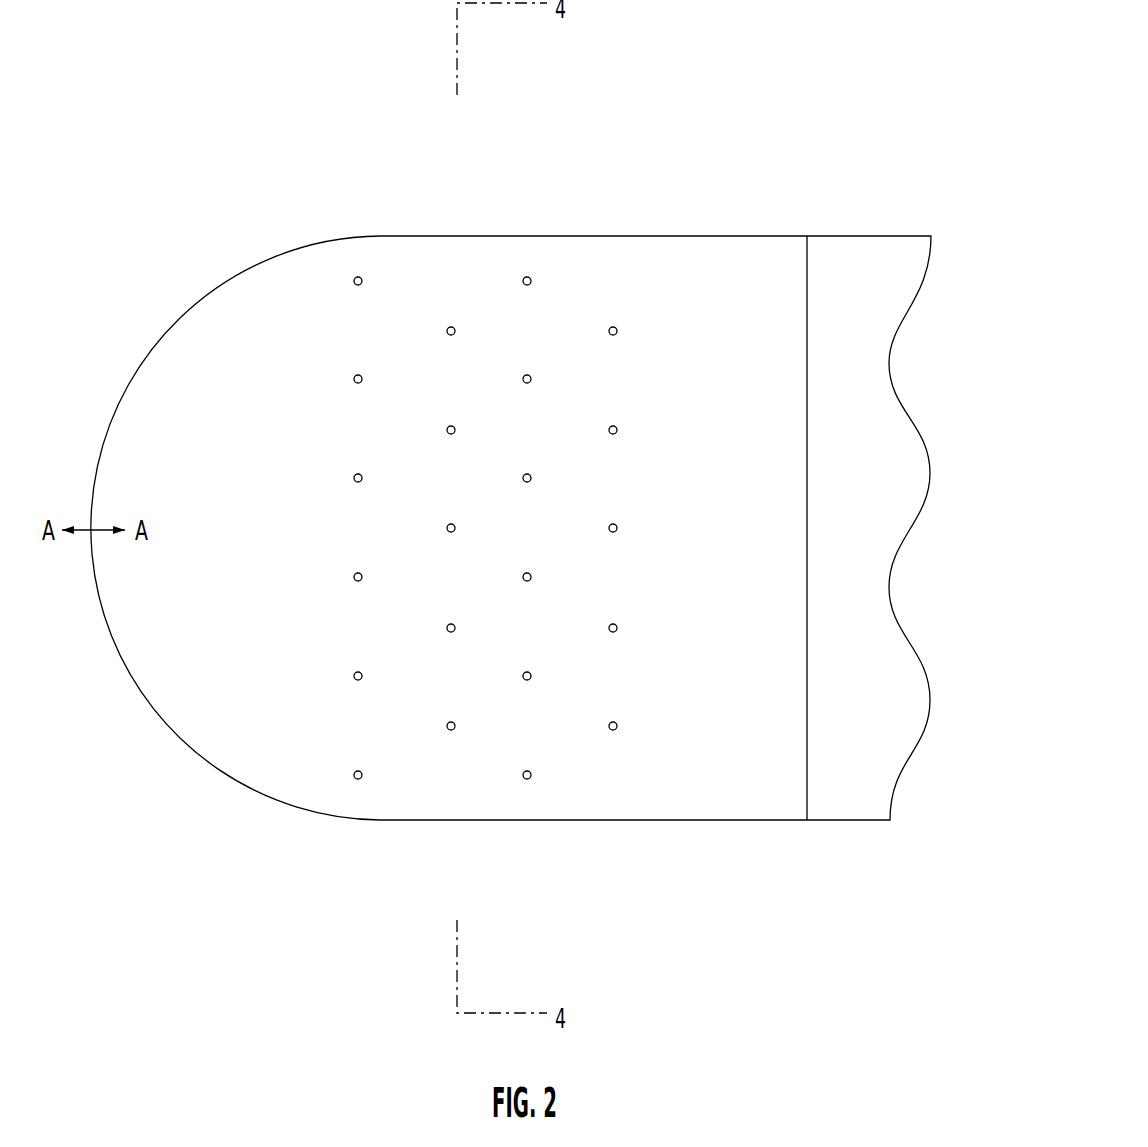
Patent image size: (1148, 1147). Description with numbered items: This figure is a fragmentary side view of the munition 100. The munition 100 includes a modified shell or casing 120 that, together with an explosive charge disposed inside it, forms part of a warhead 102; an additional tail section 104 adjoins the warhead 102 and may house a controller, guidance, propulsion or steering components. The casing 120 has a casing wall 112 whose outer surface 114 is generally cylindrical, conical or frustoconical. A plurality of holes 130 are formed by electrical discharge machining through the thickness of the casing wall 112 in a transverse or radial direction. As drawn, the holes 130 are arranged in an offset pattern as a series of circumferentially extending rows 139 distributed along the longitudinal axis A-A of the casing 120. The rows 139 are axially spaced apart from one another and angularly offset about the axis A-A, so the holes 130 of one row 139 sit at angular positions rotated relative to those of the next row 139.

The munition 100 is at (837, 93).
The warhead 102 is at (672, 195).
The tail section 104 is at (868, 417).
The casing wall 112 is at (167, 372).
The outer surface 114 is at (427, 283).
The modified casing 120 is at (262, 260).
The holes 130 is at (616, 323).
The rows 139 is at (360, 798).